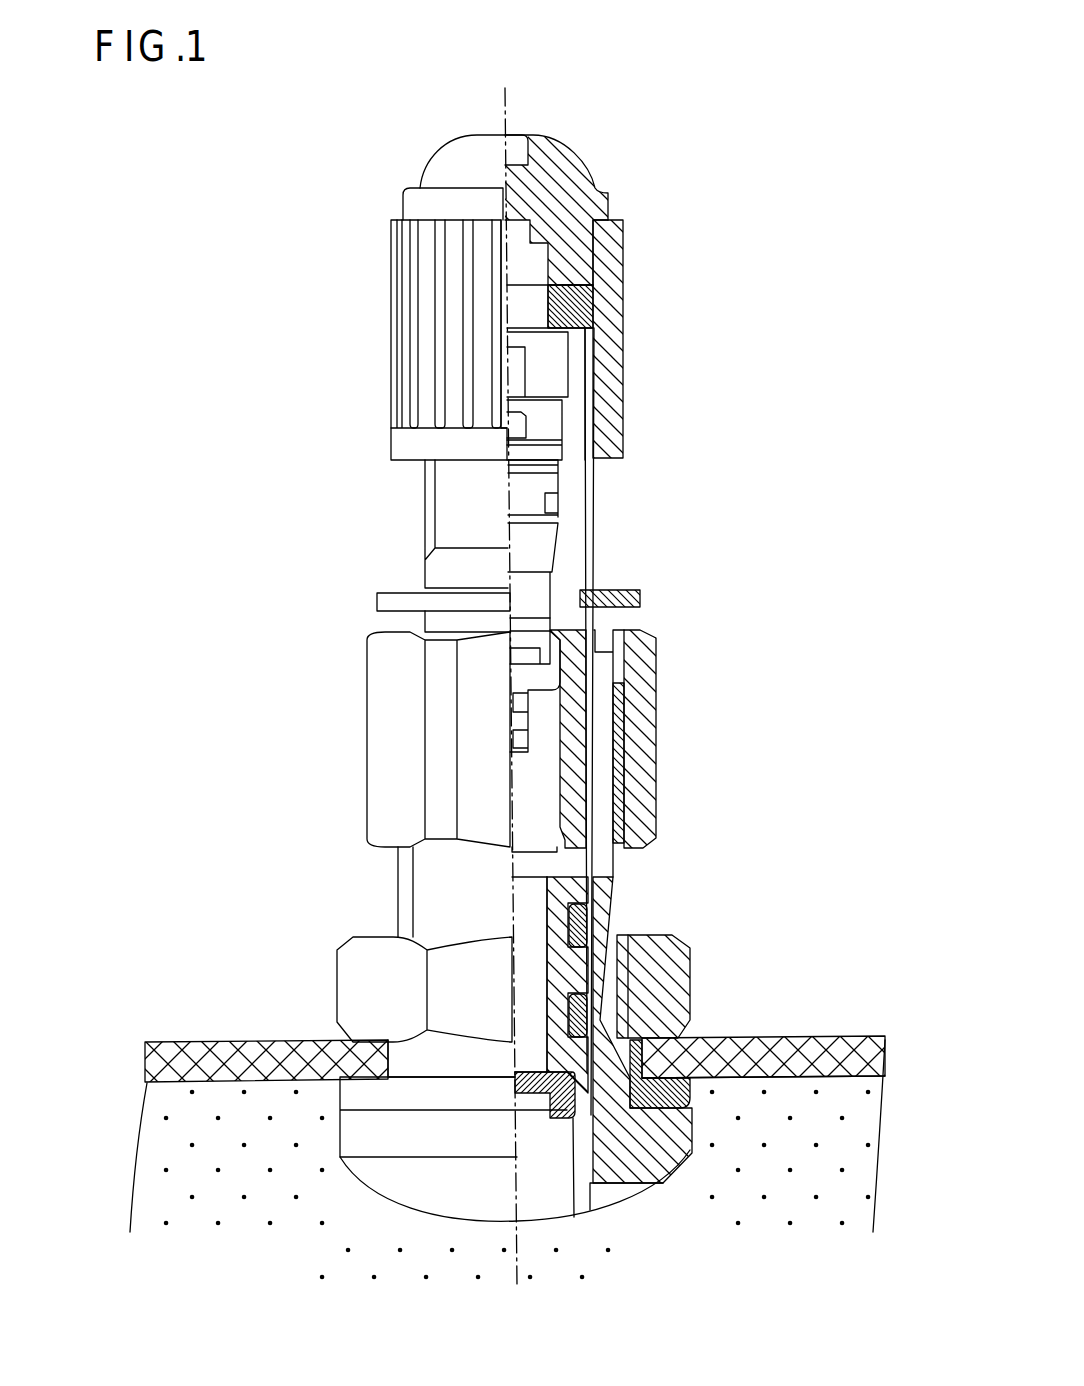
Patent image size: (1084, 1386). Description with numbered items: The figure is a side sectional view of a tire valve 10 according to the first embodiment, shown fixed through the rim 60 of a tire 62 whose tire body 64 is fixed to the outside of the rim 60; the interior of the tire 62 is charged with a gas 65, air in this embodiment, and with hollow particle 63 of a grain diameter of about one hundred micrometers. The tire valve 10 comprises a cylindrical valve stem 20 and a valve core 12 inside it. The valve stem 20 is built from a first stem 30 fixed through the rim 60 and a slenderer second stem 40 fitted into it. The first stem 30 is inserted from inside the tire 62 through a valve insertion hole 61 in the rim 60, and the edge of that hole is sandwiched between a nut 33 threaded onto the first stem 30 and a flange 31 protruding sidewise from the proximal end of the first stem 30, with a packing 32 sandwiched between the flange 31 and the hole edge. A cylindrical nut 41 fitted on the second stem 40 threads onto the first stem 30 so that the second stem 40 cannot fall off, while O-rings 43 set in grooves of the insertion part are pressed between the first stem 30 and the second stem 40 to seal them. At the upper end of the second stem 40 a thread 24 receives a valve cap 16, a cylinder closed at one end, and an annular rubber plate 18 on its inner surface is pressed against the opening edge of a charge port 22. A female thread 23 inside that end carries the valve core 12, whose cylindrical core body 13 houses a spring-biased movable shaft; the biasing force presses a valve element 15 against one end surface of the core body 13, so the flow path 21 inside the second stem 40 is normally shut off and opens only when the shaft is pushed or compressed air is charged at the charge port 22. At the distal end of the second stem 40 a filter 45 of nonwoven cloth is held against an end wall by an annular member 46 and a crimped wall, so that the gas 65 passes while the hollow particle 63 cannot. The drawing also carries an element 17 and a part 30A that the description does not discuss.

The tire valve 10 is at (668, 30).
The valve core 12 is at (562, 538).
The core body 13 is at (534, 600).
The valve element 15 is at (541, 676).
The valve cap 16 is at (401, 205).
The cap ring 17 is at (605, 452).
The rubber plate 18 is at (600, 288).
The valve stem 20 is at (690, 861).
The flow path 21 is at (553, 767).
The charge port 22 is at (580, 330).
The female thread 23 is at (564, 427).
The thread 24 is at (598, 386).
The first stem 30 is at (612, 760).
The sleeve lower portion 30A is at (586, 882).
The flange 31 is at (667, 1147).
The packing 32 is at (668, 1094).
The nut 33 is at (350, 990).
The second stem 40 is at (590, 688).
The cylindrical nut 41 is at (386, 726).
The O-rings 43 is at (592, 1012).
The filter 45 is at (536, 1096).
The annular member 46 is at (574, 1222).
The rim 60 is at (498, 1047).
The valve insertion hole 61 is at (386, 1078).
The tire 62 is at (204, 1037).
The hollow particle 63 is at (800, 1088).
The tire body 64 is at (862, 1177).
The gas 65 is at (832, 1092).